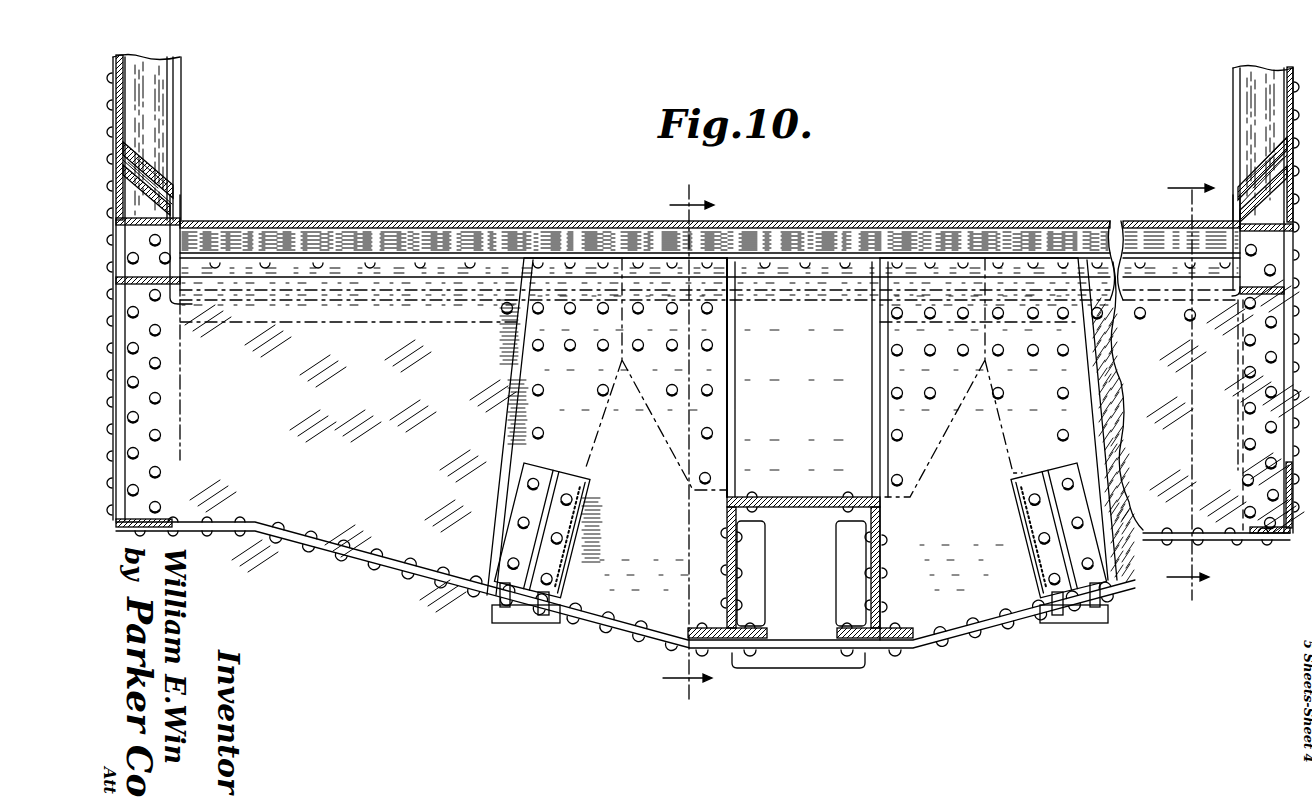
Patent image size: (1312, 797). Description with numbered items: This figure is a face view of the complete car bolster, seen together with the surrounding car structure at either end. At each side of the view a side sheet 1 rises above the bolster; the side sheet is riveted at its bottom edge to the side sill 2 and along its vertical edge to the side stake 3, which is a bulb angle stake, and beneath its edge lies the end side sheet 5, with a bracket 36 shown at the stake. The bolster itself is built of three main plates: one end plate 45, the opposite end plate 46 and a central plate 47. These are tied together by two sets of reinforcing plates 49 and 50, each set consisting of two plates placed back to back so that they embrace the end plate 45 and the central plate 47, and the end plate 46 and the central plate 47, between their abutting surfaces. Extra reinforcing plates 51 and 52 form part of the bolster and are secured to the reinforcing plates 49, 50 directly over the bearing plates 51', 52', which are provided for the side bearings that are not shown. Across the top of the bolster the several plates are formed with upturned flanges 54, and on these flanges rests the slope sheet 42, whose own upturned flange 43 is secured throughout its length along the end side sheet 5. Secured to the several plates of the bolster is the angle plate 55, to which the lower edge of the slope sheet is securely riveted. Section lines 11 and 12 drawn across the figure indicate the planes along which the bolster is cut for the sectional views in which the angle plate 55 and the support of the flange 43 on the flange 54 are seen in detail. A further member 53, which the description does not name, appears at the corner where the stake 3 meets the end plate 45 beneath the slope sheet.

The side sheet 1 is at (116, 93).
The end side sheet 5 is at (116, 128).
The side stake 3 is at (158, 140).
The bracket 36 is at (178, 193).
The flange 43 is at (182, 205).
The corner angle 53 is at (165, 293).
The slope sheet 42 is at (452, 222).
The upturned flange 54 is at (285, 260).
The angle plate 55 is at (352, 313).
The end plate 45 is at (719, 446).
The side sill 2 is at (150, 520).
The reinforcing plates 49 is at (611, 426).
The central plate 47 is at (800, 449).
The reinforcing plates 50 is at (1007, 424).
The opposite end plate 46 is at (1113, 445).
The section line 11 is at (688, 445).
The section line 12 is at (1190, 391).
The extra reinforcing plate 51 is at (507, 543).
The bearing plate 51' is at (526, 624).
The extra reinforcing plate 52 is at (1051, 565).
The bearing plate 52' is at (1080, 625).